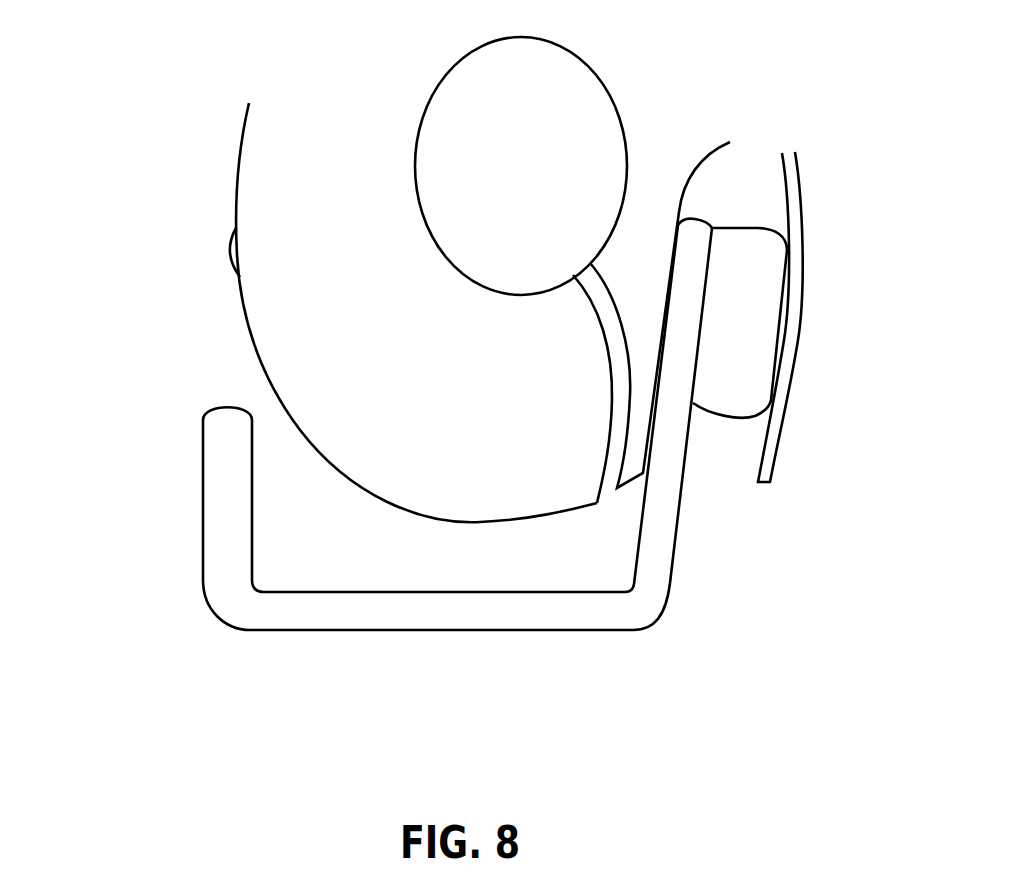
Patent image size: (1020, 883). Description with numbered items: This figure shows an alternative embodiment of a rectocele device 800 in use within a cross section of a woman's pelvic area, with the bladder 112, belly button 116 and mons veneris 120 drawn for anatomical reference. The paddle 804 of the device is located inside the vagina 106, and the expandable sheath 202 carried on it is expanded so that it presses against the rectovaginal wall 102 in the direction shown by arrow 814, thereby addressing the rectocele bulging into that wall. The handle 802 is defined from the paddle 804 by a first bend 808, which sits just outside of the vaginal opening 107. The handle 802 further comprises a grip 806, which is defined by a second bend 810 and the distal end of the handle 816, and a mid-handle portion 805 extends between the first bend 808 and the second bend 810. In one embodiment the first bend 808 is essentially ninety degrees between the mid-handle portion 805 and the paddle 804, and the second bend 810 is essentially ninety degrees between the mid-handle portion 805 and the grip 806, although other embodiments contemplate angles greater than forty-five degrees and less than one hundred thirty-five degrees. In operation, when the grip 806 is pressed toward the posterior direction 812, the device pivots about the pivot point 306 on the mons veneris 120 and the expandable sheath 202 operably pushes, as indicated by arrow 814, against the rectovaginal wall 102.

The rectocele device 800 is at (470, 622).
The handle 802 is at (463, 592).
The paddle 804 is at (667, 300).
The mid-handle portion 805 is at (628, 638).
The grip 806 is at (200, 478).
The first bend 808 is at (655, 622).
The second bend 810 is at (205, 607).
The posterior direction 812 is at (165, 520).
The arrow 814 is at (642, 331).
The distal end of the handle 816 is at (228, 405).
The bladder 112 is at (415, 153).
The belly button 116 is at (228, 252).
The mons veneris 120 is at (375, 497).
The pivot point 306 is at (528, 495).
The expandable sheath 202 is at (753, 225).
The rectovaginal wall 102 is at (783, 432).
The vagina 106 is at (748, 152).
The vaginal opening 107 is at (738, 516).